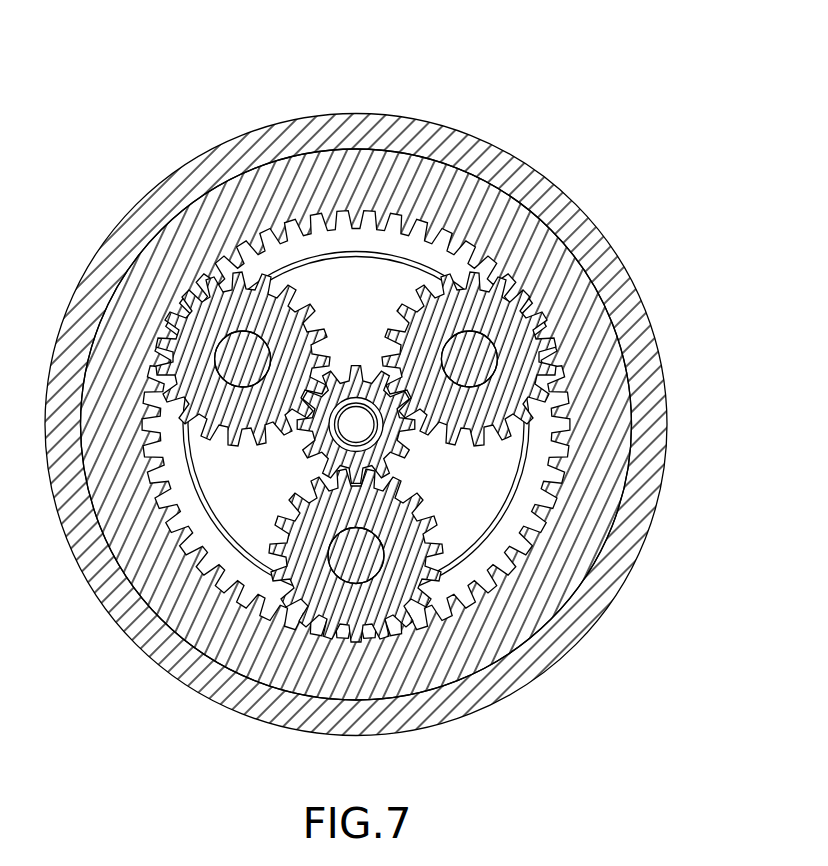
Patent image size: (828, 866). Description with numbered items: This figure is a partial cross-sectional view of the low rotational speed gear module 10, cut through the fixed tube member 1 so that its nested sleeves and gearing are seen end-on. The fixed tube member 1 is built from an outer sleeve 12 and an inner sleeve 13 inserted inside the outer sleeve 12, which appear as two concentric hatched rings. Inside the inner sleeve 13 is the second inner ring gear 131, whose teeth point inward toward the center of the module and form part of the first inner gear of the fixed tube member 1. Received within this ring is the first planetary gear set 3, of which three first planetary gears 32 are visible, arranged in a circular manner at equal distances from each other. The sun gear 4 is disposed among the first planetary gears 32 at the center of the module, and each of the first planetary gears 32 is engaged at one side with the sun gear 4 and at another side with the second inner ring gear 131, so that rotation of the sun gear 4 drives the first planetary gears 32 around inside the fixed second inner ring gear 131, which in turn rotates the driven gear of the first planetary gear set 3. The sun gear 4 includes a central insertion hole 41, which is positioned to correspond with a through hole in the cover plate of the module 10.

The low rotational speed gear module 10 is at (369, 42).
The fixed tube member 1 is at (446, 114).
The outer sleeve 12 is at (538, 185).
The inner sleeve 13 is at (520, 620).
The second inner ring gear 131 is at (507, 542).
The first planetary gear set 3 is at (510, 452).
The first planetary gears 32 is at (513, 323).
The sun gear 4 is at (298, 440).
The insertion hole 41 is at (355, 432).